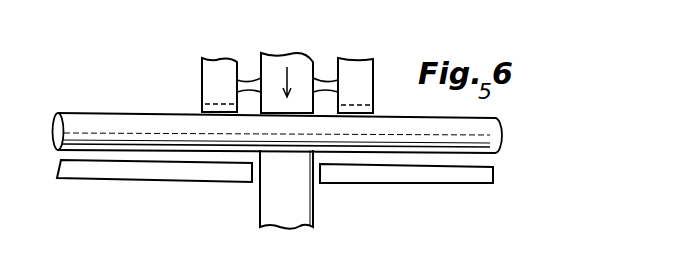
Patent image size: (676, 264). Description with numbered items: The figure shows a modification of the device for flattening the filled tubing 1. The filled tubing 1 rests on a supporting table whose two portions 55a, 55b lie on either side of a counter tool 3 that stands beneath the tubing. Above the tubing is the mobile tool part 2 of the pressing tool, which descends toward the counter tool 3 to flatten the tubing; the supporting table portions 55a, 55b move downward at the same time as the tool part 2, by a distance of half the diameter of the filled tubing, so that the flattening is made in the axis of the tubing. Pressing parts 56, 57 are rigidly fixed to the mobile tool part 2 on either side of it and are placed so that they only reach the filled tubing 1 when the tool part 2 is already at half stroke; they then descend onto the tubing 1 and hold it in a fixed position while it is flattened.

The filled tubing 1 is at (417, 98).
The mobile tool part 2 is at (307, 65).
The counter tool 3 is at (303, 205).
The supporting table portion 55a is at (130, 173).
The supporting table portion 55b is at (450, 177).
The pressing part 56 is at (203, 73).
The pressing part 57 is at (365, 72).